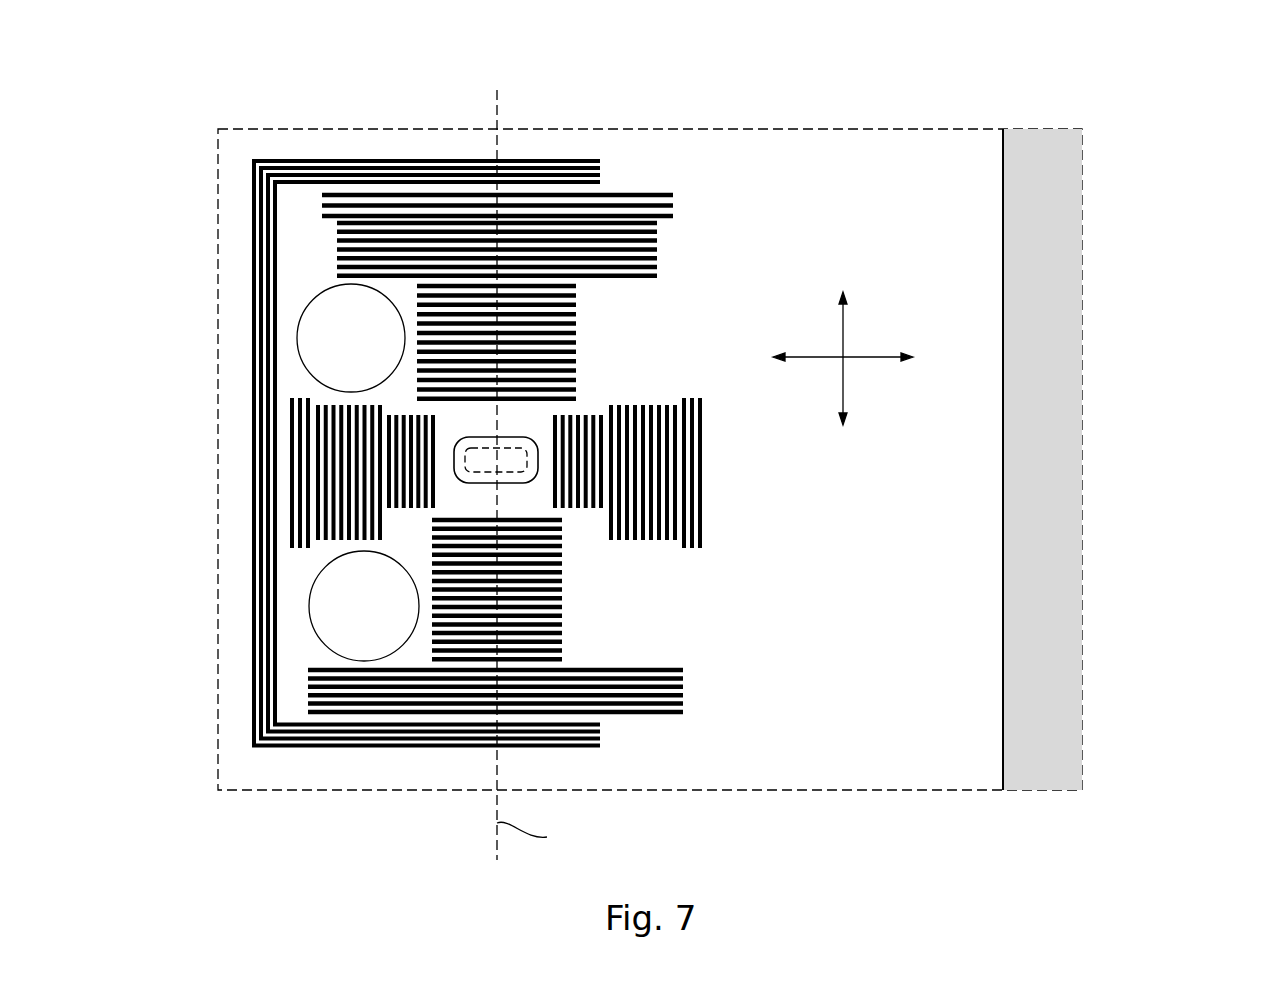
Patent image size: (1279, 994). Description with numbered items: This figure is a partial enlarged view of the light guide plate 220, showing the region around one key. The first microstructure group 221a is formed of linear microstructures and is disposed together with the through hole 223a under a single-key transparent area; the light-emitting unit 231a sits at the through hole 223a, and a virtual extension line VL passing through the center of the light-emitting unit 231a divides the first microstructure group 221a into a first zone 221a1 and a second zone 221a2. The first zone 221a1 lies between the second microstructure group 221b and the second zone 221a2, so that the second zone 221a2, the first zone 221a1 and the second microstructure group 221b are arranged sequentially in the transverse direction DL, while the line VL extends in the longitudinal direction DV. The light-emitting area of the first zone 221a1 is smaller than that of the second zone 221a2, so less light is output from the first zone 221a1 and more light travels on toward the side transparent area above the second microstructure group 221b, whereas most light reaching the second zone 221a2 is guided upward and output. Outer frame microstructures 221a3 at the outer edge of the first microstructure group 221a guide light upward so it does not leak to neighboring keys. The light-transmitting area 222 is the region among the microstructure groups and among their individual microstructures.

The light guide plate 220 is at (1257, 43).
The first microstructure group 221a is at (592, 67).
The first zone 221a1 is at (555, 146).
The second zone 221a2 is at (435, 146).
The outer frame microstructures 221a3 is at (252, 262).
The second microstructure group 221b is at (1060, 162).
The light-transmitting area 222 is at (880, 153).
The through hole 223a is at (529, 487).
The light-emitting unit 231a is at (488, 450).